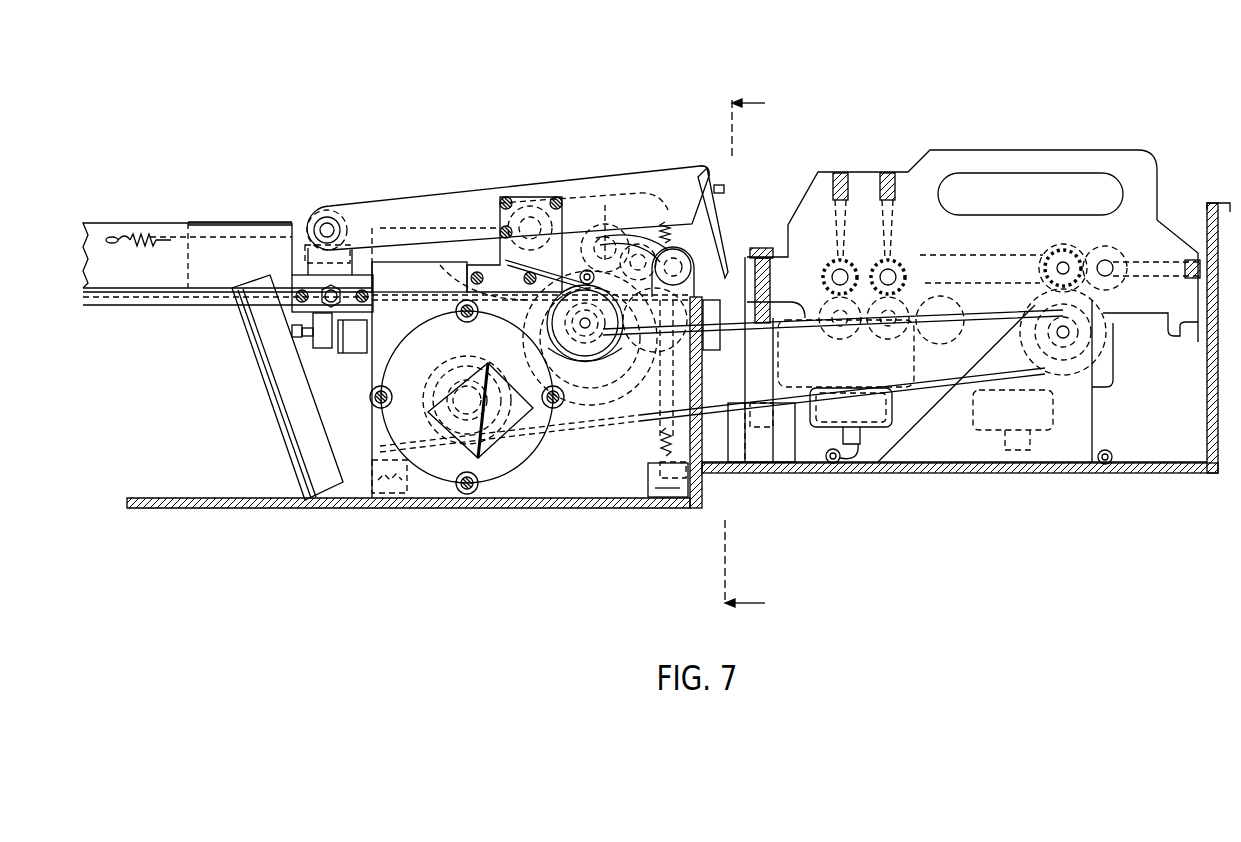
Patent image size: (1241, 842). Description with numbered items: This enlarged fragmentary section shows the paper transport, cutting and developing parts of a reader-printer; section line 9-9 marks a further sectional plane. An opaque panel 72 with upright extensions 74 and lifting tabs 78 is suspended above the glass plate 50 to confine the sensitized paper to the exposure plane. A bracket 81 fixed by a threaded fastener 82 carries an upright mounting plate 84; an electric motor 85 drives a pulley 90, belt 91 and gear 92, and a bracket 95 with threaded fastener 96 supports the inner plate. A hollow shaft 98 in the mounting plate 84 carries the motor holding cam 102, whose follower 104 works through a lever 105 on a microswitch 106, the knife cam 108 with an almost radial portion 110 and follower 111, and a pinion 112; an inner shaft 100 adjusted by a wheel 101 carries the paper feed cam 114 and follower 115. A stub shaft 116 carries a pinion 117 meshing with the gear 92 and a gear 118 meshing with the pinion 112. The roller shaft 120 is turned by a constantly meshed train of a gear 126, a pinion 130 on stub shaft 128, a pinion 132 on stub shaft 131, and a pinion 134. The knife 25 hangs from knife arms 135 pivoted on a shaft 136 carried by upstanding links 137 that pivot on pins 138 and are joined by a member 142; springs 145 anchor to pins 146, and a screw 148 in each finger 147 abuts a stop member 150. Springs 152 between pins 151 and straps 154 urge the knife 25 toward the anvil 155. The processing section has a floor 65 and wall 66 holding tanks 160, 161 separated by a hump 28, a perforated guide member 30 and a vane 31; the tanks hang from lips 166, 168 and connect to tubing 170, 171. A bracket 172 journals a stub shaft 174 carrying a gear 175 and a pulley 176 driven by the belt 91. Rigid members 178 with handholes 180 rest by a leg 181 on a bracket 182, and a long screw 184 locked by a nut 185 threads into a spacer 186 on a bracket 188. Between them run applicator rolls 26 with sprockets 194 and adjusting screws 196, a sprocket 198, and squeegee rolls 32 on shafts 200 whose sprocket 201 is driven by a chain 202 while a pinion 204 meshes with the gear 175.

The section line 9- 9 is at (753, 353).
The knife 25 is at (718, 215).
The applicator rolls 26 is at (850, 255).
The hump 28 is at (945, 285).
The guide member 30 is at (970, 292).
The vane 31 is at (970, 313).
The squeegee rolls 32 is at (1080, 255).
The glass plate 50 is at (135, 305).
The horizontal panel members 65 is at (1150, 473).
The vertical panels 66 is at (1205, 385).
The opaque panel 72 is at (83, 288).
The upright extensions 74 is at (82, 248).
The lifting tabs 78 is at (205, 222).
The bracket 81 is at (702, 500).
The threaded fastener 82 is at (690, 485).
The mounting plate 84 is at (640, 500).
The electric motor 85 is at (515, 455).
The pulley 90 is at (420, 400).
The belt 91 is at (712, 405).
The gear 92 is at (410, 340).
The bracket 95 is at (372, 440).
The threaded fastener 96 is at (372, 465).
The hollow shaft 98 is at (585, 323).
The inner shaft 100 is at (580, 350).
The wheel 101 is at (600, 349).
The motor holding cam 102 is at (630, 345).
The cam follower 104 is at (590, 280).
The lever 105 is at (600, 250).
The microswitch 106 is at (540, 197).
The knife cam 108 is at (560, 420).
The almost radially-extending portion 110 is at (503, 278).
The knife cam follower 111 is at (530, 205).
The pinion 112 is at (605, 384).
The paper feed cam 114 is at (572, 388).
The paper feed cam follower 115 is at (655, 230).
The stub shaft 116 is at (410, 380).
The pinion 117 is at (462, 268).
The gear 118 is at (490, 258).
The shaft 120 is at (662, 240).
The gear 126 is at (510, 195).
The stub shaft 128 is at (605, 227).
The pinion 130 is at (633, 240).
The stub shaft 131 is at (618, 330).
The pinion 132 is at (670, 232).
The pinion 134 is at (684, 262).
The knife arms 135 is at (418, 203).
The shaft 136 is at (322, 220).
The upstanding links 137 is at (300, 275).
The pins 138 is at (419, 277).
The interconnecting member 142 is at (343, 222).
The springs 145 is at (160, 235).
The pins 146 is at (116, 236).
The finger 147 is at (322, 348).
The screw 148 is at (285, 338).
The stop member 150 is at (355, 353).
The pin 151 is at (678, 172).
The springs 152 is at (660, 440).
The straps 154 is at (660, 462).
The anvil 155 is at (712, 350).
The tank 160 is at (892, 405).
The tank 161 is at (1050, 427).
The lip 166 is at (720, 325).
The lip 168 is at (1140, 330).
The tubing 170 is at (840, 462).
The tubing 171 is at (1105, 465).
The bracket 172 is at (1095, 432).
The stub shaft 174 is at (1063, 340).
The gear 175 is at (1105, 310).
The pulley 176 is at (1020, 345).
The rigid members 178 is at (1037, 150).
The openings 180 is at (1090, 173).
The leg 181 is at (1178, 330).
The bracket 182 is at (790, 255).
The long screw 184 is at (760, 247).
The nut 185 is at (752, 252).
The spacer 186 is at (790, 330).
The bracket 188 is at (851, 416).
The sprockets 194 is at (822, 277).
The adjusting screws 196 is at (888, 200).
The sprocket 198 is at (905, 275).
The shafts 200 is at (1072, 275).
The sprocket 201 is at (1060, 255).
The chain 202 is at (1005, 257).
The pinion 204 is at (1045, 272).